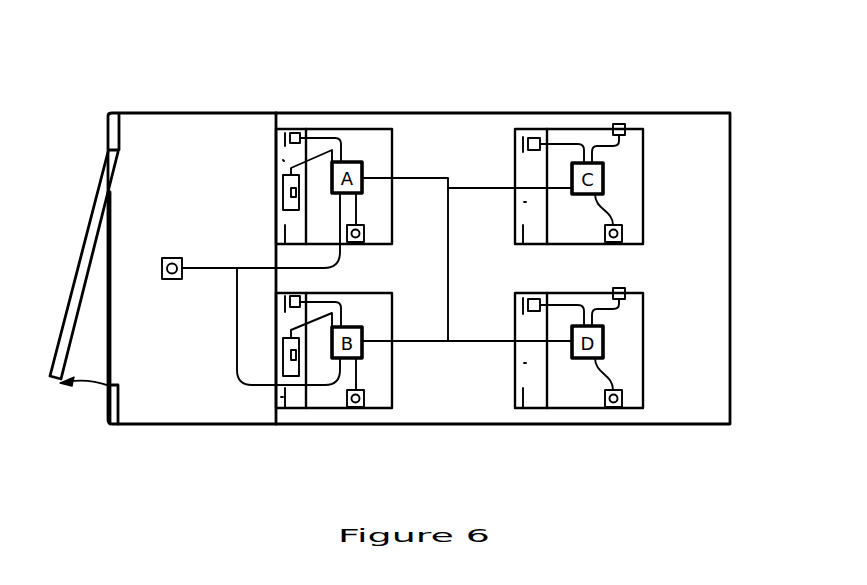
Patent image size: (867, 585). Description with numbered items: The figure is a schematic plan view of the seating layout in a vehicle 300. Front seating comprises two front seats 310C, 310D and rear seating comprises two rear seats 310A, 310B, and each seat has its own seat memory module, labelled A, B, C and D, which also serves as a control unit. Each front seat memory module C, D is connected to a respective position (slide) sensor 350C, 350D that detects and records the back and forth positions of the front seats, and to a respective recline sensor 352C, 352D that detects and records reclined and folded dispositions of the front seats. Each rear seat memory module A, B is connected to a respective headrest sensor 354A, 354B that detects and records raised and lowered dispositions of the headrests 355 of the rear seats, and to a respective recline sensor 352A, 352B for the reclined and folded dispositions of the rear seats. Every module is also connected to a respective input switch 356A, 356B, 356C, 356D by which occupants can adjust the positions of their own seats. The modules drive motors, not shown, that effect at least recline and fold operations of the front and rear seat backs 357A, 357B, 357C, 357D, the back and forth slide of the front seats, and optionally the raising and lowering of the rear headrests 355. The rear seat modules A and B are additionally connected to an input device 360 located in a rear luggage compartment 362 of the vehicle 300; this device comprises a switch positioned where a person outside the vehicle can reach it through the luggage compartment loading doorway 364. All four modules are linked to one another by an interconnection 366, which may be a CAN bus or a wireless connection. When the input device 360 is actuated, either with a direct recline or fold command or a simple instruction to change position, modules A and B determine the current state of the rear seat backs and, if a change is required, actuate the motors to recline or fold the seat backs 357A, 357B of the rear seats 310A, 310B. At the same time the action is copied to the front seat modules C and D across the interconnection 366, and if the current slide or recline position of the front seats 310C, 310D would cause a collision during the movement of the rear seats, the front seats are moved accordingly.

The vehicle 300 is at (240, 84).
The rear seat 310A is at (392, 129).
The rear seat 310B is at (392, 408).
The front seat 310C is at (643, 129).
The front seat 310D is at (643, 294).
The position (slide) sensor 350C is at (618, 123).
The position (slide) sensor 350D is at (620, 288).
The recline sensor 352A is at (295, 132).
The recline sensor 352B is at (297, 296).
The recline sensor 352C is at (532, 136).
The recline sensor 352D is at (536, 298).
The headrest sensor 354A is at (289, 192).
The headrest sensor 354B is at (288, 356).
The headrest 355 is at (283, 207).
The input switch 356A is at (364, 235).
The input switch 356B is at (347, 398).
The input switch 356C is at (624, 233).
The input switch 356D is at (624, 400).
The seat back 357A is at (283, 162).
The seat back 357B is at (281, 397).
The seat back 357C is at (525, 202).
The seat back 357D is at (525, 363).
The input device 360 is at (167, 258).
The rear luggage compartment 362 is at (155, 407).
The luggage compartment loading doorway 364 is at (109, 305).
The interconnection 366 is at (449, 290).